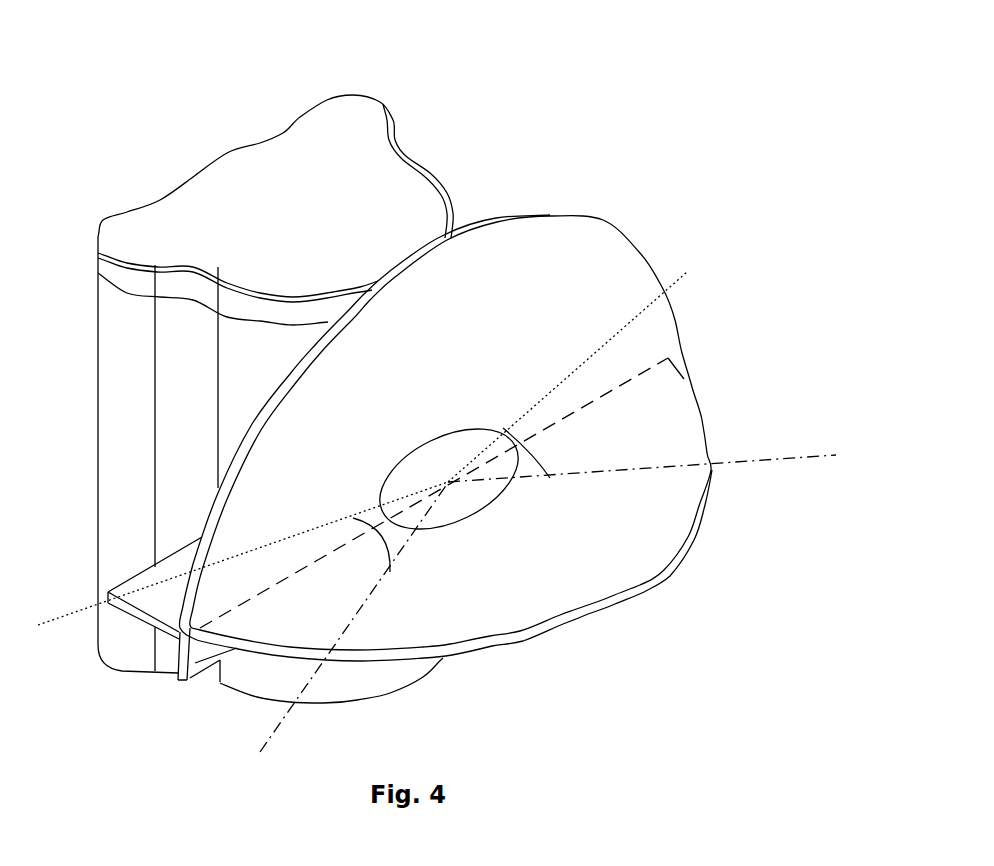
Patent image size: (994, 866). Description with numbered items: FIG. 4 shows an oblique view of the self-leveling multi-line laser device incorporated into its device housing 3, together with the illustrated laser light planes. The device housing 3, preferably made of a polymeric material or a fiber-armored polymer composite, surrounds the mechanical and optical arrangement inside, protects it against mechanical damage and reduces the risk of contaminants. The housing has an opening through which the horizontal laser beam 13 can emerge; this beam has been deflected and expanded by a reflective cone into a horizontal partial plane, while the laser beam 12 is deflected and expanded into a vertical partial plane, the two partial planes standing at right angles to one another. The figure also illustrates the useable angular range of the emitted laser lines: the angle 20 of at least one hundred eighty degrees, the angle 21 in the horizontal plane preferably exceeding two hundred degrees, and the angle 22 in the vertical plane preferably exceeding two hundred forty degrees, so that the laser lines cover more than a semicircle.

The device housing 3 is at (213, 193).
The laser beam 12 is at (550, 216).
The laser beam 13 is at (612, 596).
The angle 20 is at (633, 380).
The angle 21 is at (466, 523).
The angle 22 is at (476, 431).